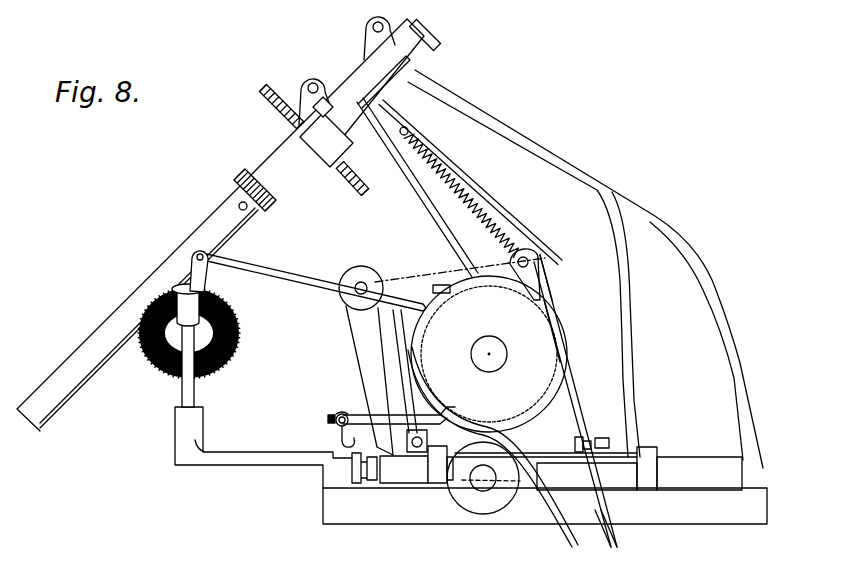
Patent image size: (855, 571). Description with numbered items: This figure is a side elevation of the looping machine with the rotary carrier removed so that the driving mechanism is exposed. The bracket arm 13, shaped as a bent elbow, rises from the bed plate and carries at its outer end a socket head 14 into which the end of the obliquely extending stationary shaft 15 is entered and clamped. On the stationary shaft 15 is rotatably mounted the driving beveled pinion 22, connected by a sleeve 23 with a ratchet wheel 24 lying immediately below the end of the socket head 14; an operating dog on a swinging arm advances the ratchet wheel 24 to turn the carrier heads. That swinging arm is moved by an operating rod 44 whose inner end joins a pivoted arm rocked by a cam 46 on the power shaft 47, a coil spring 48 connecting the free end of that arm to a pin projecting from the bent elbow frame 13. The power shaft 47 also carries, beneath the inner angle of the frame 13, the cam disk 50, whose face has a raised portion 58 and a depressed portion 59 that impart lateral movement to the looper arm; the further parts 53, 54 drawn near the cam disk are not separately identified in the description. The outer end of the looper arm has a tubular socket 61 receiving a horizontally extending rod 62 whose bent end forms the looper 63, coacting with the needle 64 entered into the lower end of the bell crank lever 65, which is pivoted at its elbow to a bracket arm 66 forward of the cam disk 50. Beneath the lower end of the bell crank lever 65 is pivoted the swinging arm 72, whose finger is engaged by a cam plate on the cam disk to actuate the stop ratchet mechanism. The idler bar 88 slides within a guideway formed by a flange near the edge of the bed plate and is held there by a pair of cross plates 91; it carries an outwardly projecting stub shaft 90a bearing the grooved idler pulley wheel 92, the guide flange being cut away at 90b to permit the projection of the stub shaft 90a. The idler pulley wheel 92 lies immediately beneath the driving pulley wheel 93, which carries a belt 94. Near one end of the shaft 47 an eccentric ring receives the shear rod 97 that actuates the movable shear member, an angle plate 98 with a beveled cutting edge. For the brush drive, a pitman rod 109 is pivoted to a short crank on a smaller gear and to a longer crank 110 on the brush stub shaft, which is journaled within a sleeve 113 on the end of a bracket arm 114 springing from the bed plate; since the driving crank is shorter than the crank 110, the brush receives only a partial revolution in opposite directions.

The bracket arm 13 is at (571, 269).
The socket head 14 is at (350, 75).
The stationary shaft 15 is at (167, 258).
The driving beveled pinion 22 is at (243, 172).
The sleeve 23 is at (270, 152).
The ratchet wheel 24 is at (277, 93).
The operating rod 44 is at (430, 228).
The cam 46 is at (533, 272).
The power shaft 47 is at (472, 343).
The coil spring 48 is at (480, 208).
The cam disk 50 is at (563, 318).
The bar 53 is at (374, 418).
The latch 54 is at (577, 437).
The raised portion 58 is at (570, 381).
The depressed portion 59 is at (549, 291).
The tubular socket 61 is at (342, 413).
The rod 62 is at (337, 413).
The looper 63 is at (328, 419).
The needle 64 is at (337, 442).
The bell crank lever 65 is at (366, 360).
The bracket arm 66 is at (407, 381).
The swinging arm 72 is at (377, 519).
The idler bar 88 is at (523, 446).
The stub shaft 90a is at (490, 482).
The cut-away portion 90b is at (545, 475).
The cross plates 91 is at (433, 483).
The idler pulley wheel 92 is at (478, 494).
The driving pulley wheel 93 is at (489, 354).
The belt 94 is at (620, 542).
The shear rod 97 is at (653, 470).
The angle plate 98 is at (699, 473).
The pitman rod 109 is at (285, 280).
The crank 110 is at (197, 279).
The sleeve 113 is at (173, 374).
The bracket arm 114 is at (298, 466).